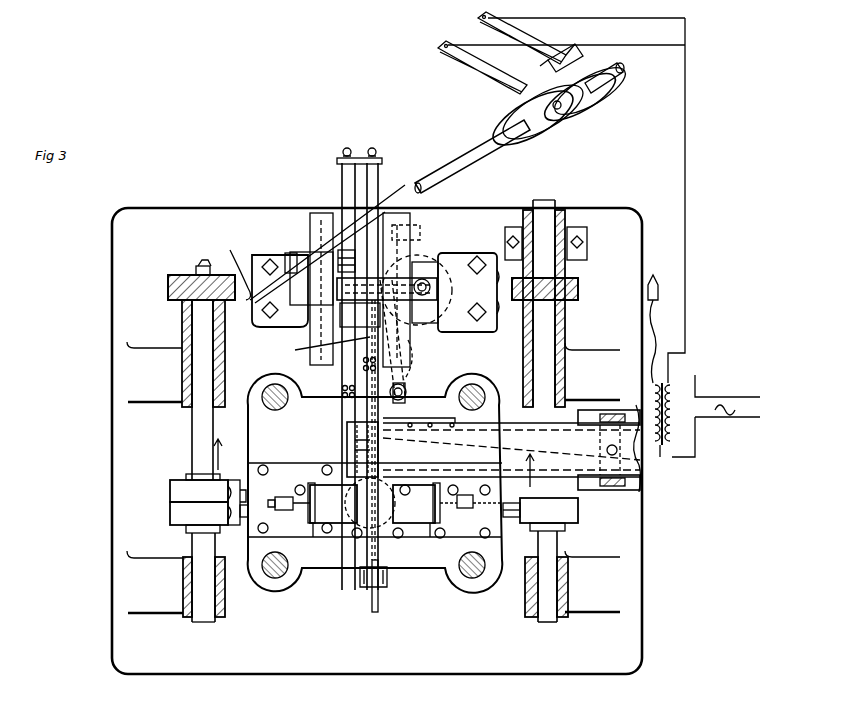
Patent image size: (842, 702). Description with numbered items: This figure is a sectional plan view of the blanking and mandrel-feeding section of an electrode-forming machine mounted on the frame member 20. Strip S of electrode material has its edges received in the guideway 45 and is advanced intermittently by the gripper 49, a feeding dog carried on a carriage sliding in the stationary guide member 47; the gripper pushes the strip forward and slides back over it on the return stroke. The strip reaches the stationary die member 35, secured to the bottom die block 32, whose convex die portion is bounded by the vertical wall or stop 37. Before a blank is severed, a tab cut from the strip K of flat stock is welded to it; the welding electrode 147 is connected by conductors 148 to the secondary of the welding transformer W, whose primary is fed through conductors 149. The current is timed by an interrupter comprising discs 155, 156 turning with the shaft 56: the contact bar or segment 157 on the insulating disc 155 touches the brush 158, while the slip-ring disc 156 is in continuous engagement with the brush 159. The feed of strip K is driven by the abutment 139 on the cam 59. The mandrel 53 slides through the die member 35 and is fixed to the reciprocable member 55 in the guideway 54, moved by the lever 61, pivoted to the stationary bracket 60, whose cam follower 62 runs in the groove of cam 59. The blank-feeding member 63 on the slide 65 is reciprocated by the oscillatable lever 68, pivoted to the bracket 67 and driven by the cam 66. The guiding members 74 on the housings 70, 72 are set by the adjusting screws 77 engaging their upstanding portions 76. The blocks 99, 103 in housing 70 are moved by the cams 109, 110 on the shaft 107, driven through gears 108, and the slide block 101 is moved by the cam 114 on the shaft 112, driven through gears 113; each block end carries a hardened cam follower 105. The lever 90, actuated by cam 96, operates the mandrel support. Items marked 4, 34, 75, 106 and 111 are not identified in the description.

The frame member 20 is at (115, 250).
The bottom die block 32 is at (472, 374).
The mounting post 34 is at (264, 394).
The stationary die member 35 is at (350, 458).
The vertical wall or stop 37 is at (346, 434).
The direction arrow 4 is at (380, 461).
The guideway 45 is at (506, 430).
The stationary guide member 47 is at (590, 414).
The gripper 49 is at (616, 490).
The mandrel 53 is at (348, 398).
The guideway 54 is at (343, 227).
The reciprocable member 55 is at (372, 184).
The shaft 56 is at (478, 60).
The cam 59 is at (418, 228).
The stationary bracket 60 is at (462, 288).
The lever 61 is at (321, 347).
The cam follower 62 is at (403, 317).
The blank-feeding member 63 is at (346, 448).
The slide 65 is at (347, 232).
The cam 66 is at (333, 232).
The bracket 67 is at (298, 294).
The oscillatable lever 68 is at (345, 258).
The housing 70 is at (318, 545).
The housing 72 is at (424, 545).
The guiding member 74 is at (374, 503).
The bracket 75 is at (346, 531).
The upstanding portion 76 is at (462, 488).
The adjusting screw 77 is at (304, 508).
The lever 90 is at (430, 364).
The cam 96 is at (370, 280).
The block 99 is at (244, 510).
The slide block 101 is at (506, 510).
The block 103 is at (244, 480).
The hardened cam follower 105 is at (234, 480).
The bearing 106 is at (214, 348).
The shaft 107 is at (196, 428).
The gears 108 is at (169, 288).
The cam 109 is at (177, 510).
The cam 110 is at (170, 491).
The bearing 111 is at (560, 336).
The shaft 112 is at (544, 200).
The gears 113 is at (578, 287).
The cam 114 is at (578, 522).
The abutment 139 is at (413, 232).
The welding electrode 147 is at (658, 286).
The conductors 148 is at (649, 333).
The conductors 149 is at (698, 380).
The disc 155 is at (597, 124).
The disc 156 is at (558, 150).
The contact bar or segment 157 is at (575, 62).
The brush 158 is at (523, 32).
The brush 159 is at (478, 68).
The strip of flat stock K is at (408, 390).
The strip of electrode material S is at (652, 470).
The welding transformer W is at (664, 382).